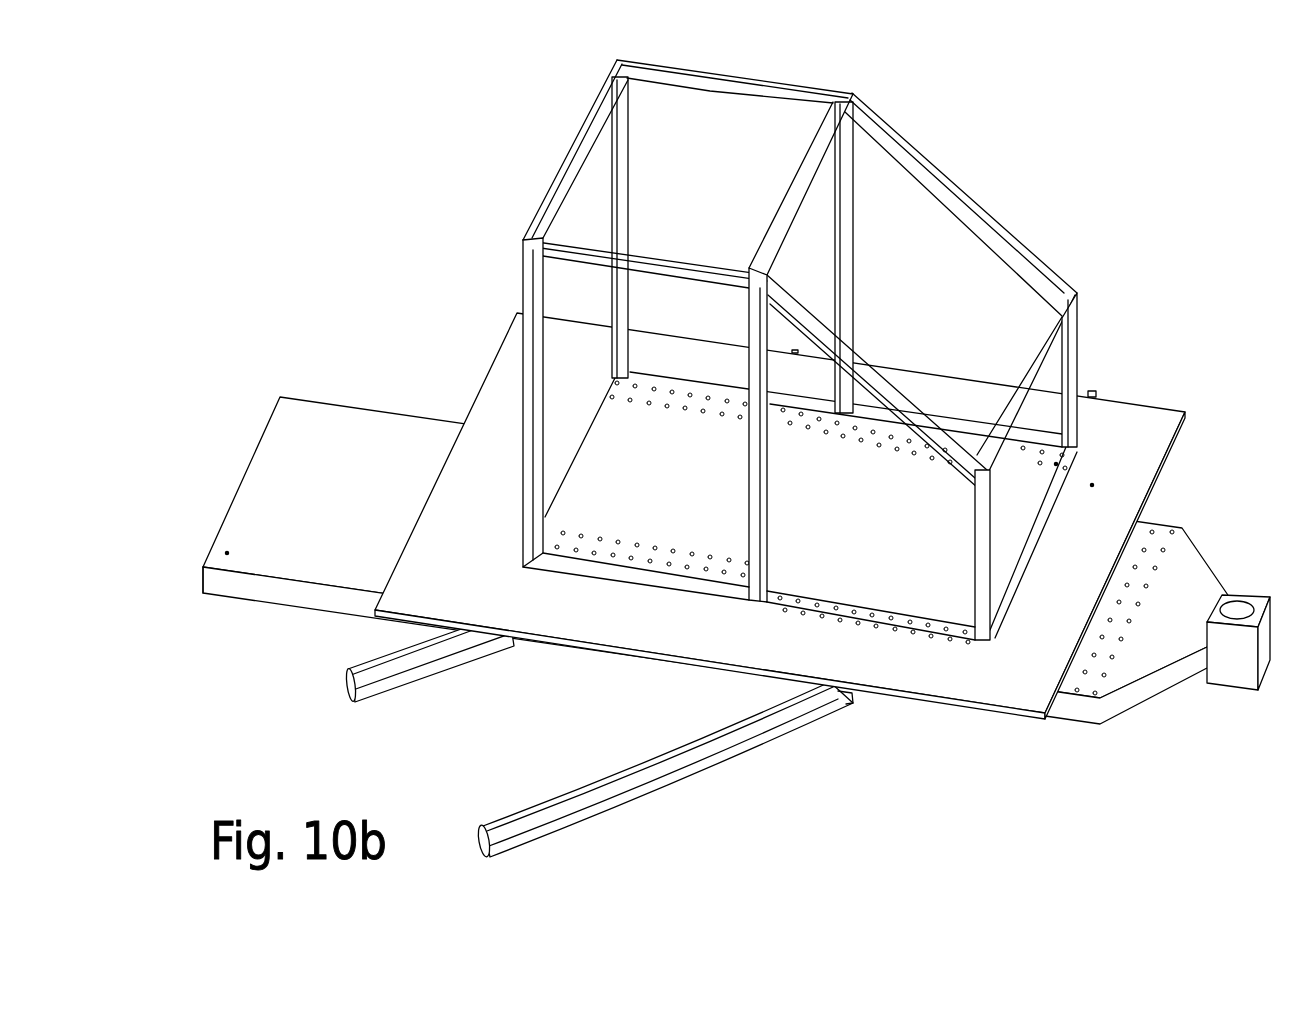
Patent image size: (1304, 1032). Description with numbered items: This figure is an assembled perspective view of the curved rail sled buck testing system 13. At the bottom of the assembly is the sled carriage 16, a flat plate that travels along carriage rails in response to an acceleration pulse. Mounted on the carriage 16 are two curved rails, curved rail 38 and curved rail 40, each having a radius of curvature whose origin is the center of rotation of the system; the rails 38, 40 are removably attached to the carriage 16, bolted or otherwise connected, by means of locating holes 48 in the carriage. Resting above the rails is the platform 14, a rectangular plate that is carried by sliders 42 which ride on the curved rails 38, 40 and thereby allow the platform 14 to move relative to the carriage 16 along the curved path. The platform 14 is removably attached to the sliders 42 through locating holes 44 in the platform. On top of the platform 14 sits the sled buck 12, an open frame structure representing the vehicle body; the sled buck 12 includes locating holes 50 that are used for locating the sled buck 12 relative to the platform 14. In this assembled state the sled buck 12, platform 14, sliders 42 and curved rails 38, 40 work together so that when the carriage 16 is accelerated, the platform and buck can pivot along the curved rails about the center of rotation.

The sled buck 12 is at (963, 191).
The curved rail sled buck testing system 13 is at (1123, 127).
The platform 14 is at (968, 680).
The sled carriage 16 is at (282, 467).
The curved rail 38 is at (342, 682).
The curved rail 40 is at (573, 823).
The slider 42 is at (853, 697).
The locating hole 44 is at (1092, 485).
The locating hole 48 is at (227, 553).
The locating hole 50 is at (1056, 464).